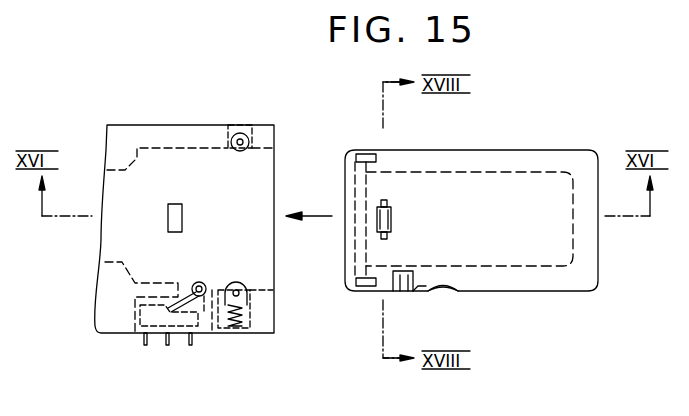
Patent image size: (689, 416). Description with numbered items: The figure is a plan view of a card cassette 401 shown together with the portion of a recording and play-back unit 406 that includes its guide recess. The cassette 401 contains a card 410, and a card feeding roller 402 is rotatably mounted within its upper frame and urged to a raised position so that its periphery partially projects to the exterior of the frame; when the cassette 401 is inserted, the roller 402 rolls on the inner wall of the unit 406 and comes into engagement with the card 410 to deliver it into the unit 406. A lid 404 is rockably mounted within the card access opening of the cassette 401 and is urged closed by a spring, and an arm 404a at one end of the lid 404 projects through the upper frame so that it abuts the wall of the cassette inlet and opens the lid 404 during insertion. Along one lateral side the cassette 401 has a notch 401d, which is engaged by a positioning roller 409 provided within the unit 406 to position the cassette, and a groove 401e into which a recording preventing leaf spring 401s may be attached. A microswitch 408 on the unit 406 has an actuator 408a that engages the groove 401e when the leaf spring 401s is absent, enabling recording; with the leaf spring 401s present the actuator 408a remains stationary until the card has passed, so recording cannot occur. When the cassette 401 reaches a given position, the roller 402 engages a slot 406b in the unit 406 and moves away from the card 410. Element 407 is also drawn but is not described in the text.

The cassette 401 is at (532, 292).
The recording preventing leaf spring 401s is at (403, 292).
The groove 401e is at (416, 284).
The notch 401d is at (452, 288).
The card feeding roller 402 is at (382, 216).
The lid 404 is at (356, 178).
The arm 404a is at (365, 153).
The recording and play-back unit 406 is at (219, 333).
The slot 406b is at (172, 216).
The roller 407 is at (237, 156).
The microswitch 408 is at (142, 313).
The actuator 408a is at (204, 283).
The positioning roller 409 is at (248, 284).
The card 410 is at (563, 272).